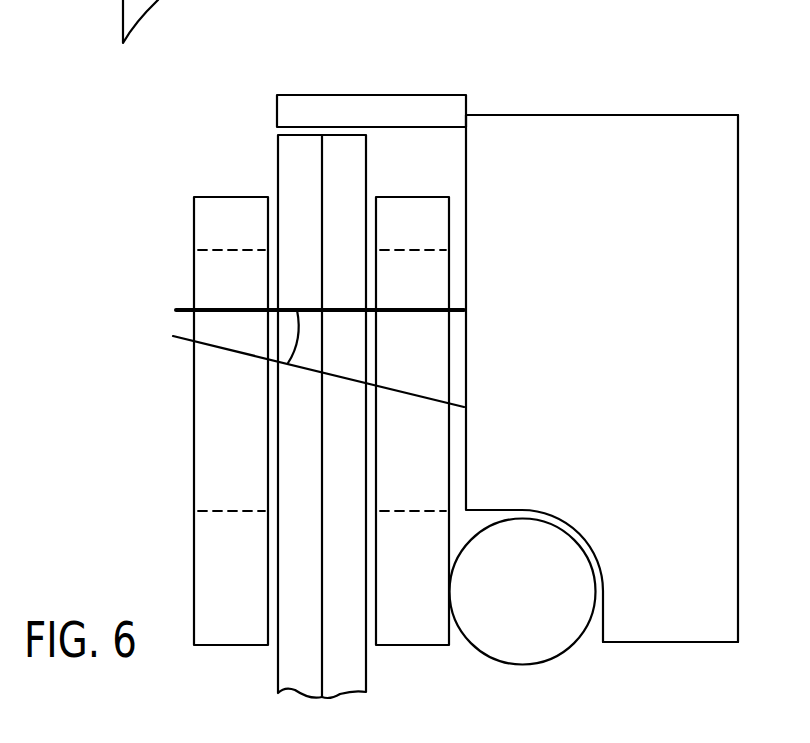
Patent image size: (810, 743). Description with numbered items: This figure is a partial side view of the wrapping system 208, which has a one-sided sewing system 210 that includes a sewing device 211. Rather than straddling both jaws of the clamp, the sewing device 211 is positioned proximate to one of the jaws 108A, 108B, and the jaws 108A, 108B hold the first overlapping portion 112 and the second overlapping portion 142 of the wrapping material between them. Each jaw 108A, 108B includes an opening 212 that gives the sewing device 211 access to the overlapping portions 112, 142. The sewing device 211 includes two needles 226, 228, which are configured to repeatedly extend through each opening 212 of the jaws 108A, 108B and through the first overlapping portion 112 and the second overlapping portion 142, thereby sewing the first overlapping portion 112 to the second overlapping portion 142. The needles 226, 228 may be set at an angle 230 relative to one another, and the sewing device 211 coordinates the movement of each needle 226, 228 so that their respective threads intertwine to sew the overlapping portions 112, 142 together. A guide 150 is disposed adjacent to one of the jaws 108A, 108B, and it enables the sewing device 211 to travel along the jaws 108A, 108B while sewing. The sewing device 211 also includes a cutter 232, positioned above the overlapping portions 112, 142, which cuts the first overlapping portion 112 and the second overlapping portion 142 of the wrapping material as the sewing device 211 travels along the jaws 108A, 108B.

The wrapping system 208 is at (670, 64).
The sewing device 211 is at (553, 123).
The one-sided sewing system 210 is at (675, 664).
The cutter 232 is at (368, 93).
The first overlapping portion 112 is at (287, 657).
The second overlapping portion 142 is at (350, 655).
The jaw 108A is at (221, 207).
The jaw 108B is at (415, 207).
The guide 150 is at (533, 632).
The needle 226 is at (222, 308).
The needle 228 is at (225, 352).
The angle 230 is at (298, 338).
The opening 212 is at (165, 324).